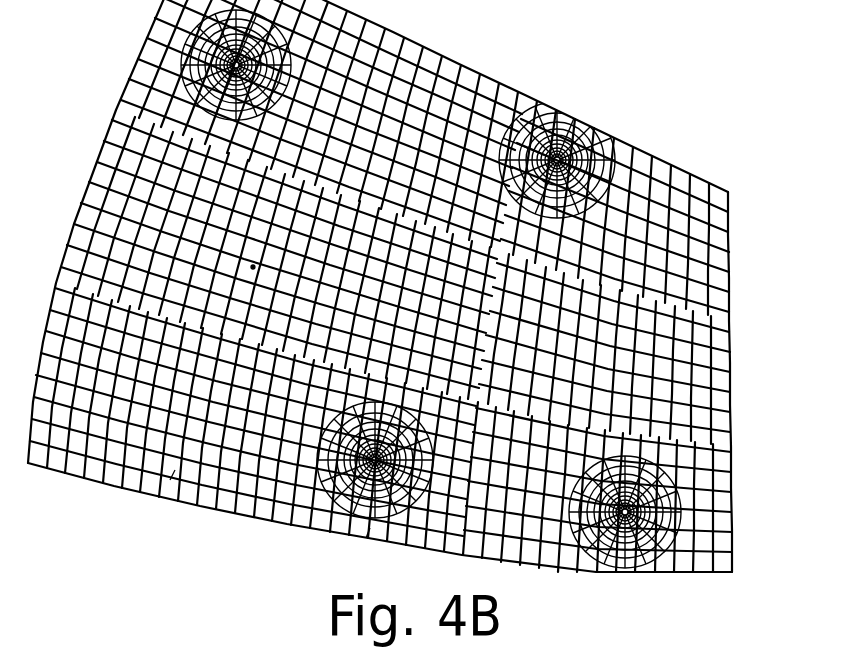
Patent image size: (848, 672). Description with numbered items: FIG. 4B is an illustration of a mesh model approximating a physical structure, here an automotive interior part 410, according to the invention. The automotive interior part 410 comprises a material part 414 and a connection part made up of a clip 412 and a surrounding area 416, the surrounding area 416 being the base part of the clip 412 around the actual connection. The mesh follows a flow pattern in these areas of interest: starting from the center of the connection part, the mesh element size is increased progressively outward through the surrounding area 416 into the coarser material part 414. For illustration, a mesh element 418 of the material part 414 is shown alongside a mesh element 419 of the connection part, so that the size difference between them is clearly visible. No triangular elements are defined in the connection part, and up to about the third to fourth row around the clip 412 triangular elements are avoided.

The automotive interior part 410 is at (73, 486).
The clip 412 is at (366, 538).
The material part 414 is at (255, 269).
The surrounding area 416 is at (345, 483).
The mesh element of the material part 418 is at (170, 480).
The mesh element of the connection part 419 is at (387, 477).